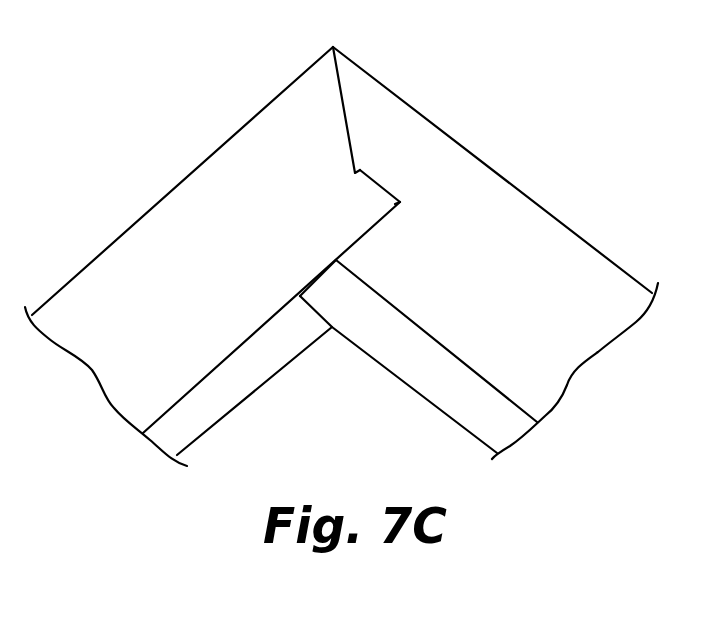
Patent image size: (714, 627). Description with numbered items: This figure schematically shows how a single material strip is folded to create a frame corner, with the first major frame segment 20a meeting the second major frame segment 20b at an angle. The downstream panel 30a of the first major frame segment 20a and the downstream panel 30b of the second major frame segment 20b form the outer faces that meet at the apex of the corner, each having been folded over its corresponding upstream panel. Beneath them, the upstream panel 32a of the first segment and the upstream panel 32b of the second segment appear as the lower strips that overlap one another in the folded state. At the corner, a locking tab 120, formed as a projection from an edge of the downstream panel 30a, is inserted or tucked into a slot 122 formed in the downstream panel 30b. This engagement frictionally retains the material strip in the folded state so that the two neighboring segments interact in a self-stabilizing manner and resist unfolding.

The first major frame segment 20a is at (234, 103).
The second major frame segment 20b is at (420, 85).
The downstream panel 30a is at (176, 194).
The downstream panel 30b is at (495, 164).
The upstream panel 32a is at (248, 398).
The upstream panel 32b is at (422, 400).
The locking tab 120 is at (375, 187).
The slot 122 is at (387, 202).